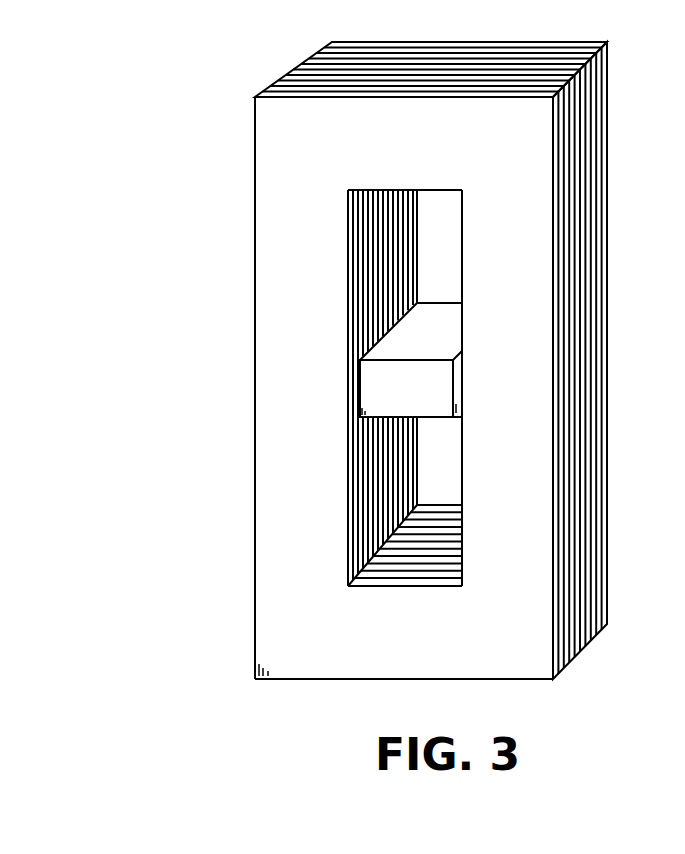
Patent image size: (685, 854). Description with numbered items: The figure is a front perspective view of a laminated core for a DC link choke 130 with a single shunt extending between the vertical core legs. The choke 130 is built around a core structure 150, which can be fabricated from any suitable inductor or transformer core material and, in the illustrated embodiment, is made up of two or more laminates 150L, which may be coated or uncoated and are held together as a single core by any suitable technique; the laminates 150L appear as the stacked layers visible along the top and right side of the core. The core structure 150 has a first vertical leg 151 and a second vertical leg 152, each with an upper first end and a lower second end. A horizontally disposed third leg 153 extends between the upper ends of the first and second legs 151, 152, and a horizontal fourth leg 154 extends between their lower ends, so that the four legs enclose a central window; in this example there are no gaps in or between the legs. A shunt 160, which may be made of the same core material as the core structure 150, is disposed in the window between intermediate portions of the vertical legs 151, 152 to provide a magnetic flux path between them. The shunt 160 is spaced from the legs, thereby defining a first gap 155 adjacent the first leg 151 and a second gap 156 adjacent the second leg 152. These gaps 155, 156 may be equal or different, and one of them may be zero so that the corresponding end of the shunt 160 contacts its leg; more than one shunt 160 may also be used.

The DC choke 130 is at (218, 52).
The core structure 150 is at (255, 139).
The laminates 150L is at (607, 133).
The first vertical leg 151 is at (316, 400).
The second vertical leg 152 is at (523, 400).
The third leg 153 is at (420, 165).
The fourth leg 154 is at (421, 654).
The first gap 155 is at (348, 414).
The second gap 156 is at (464, 421).
The shunt 160 is at (420, 401).